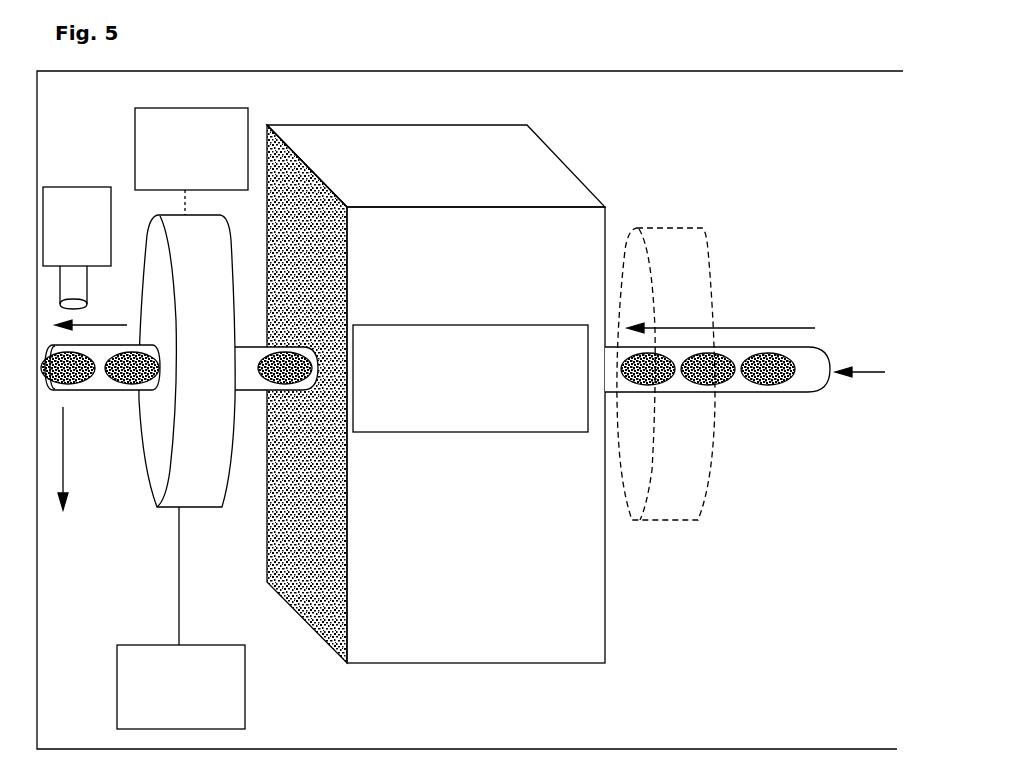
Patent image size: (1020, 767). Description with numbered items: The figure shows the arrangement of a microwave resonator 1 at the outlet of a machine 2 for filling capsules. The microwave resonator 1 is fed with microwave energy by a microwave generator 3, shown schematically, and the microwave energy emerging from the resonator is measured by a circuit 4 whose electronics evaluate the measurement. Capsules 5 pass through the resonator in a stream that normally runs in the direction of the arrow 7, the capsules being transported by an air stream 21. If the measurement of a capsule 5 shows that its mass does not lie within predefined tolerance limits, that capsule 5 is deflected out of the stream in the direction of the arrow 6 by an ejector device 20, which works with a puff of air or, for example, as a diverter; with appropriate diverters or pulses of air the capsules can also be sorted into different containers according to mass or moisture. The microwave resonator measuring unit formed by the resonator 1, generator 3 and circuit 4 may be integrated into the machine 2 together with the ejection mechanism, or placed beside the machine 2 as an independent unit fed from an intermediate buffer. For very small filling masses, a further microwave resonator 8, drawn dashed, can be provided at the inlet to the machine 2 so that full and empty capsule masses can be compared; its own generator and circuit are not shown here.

The microwave resonator 1 is at (187, 361).
The machine 2 is at (470, 378).
The microwave generator 3 is at (191, 161).
The measuring and evaluation circuit 4 is at (181, 618).
The capsule 5 is at (123, 378).
The arrow (deflection direction) 6 is at (70, 465).
The arrow (stream direction) 7 is at (100, 323).
The further microwave resonator 8 is at (677, 235).
The ejector device 20 is at (77, 248).
The air stream 21 is at (867, 367).